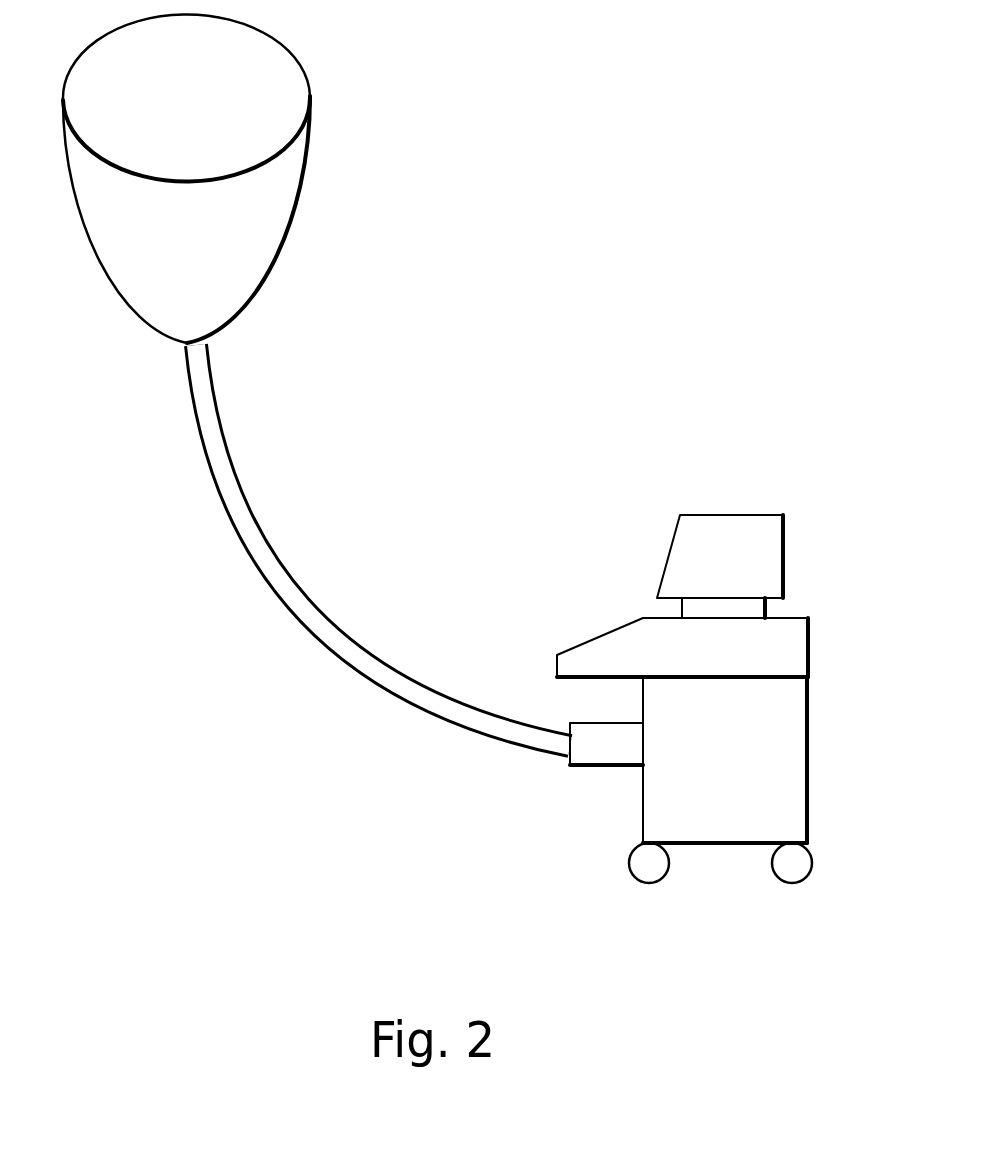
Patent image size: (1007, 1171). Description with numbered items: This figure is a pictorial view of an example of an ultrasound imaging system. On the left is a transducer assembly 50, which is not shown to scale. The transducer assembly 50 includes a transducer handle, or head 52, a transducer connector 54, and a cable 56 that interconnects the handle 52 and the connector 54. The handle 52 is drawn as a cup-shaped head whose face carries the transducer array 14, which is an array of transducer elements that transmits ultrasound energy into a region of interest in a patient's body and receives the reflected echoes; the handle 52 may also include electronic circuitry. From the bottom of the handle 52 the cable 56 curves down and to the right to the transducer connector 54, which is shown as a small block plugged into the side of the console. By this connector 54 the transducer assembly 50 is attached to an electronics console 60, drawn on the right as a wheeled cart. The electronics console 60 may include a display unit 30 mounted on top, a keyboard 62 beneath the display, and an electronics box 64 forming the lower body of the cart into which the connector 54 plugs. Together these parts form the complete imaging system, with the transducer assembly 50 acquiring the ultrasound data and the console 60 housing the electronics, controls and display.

The transducer array 14 is at (115, 70).
The transducer handle 52 is at (90, 252).
The transducer assembly 50 is at (203, 512).
The cable 56 is at (337, 650).
The transducer connector 54 is at (598, 767).
The keyboard 62 is at (587, 638).
The display unit 30 is at (787, 532).
The electronics console 60 is at (733, 807).
The electronics box 64 is at (703, 734).